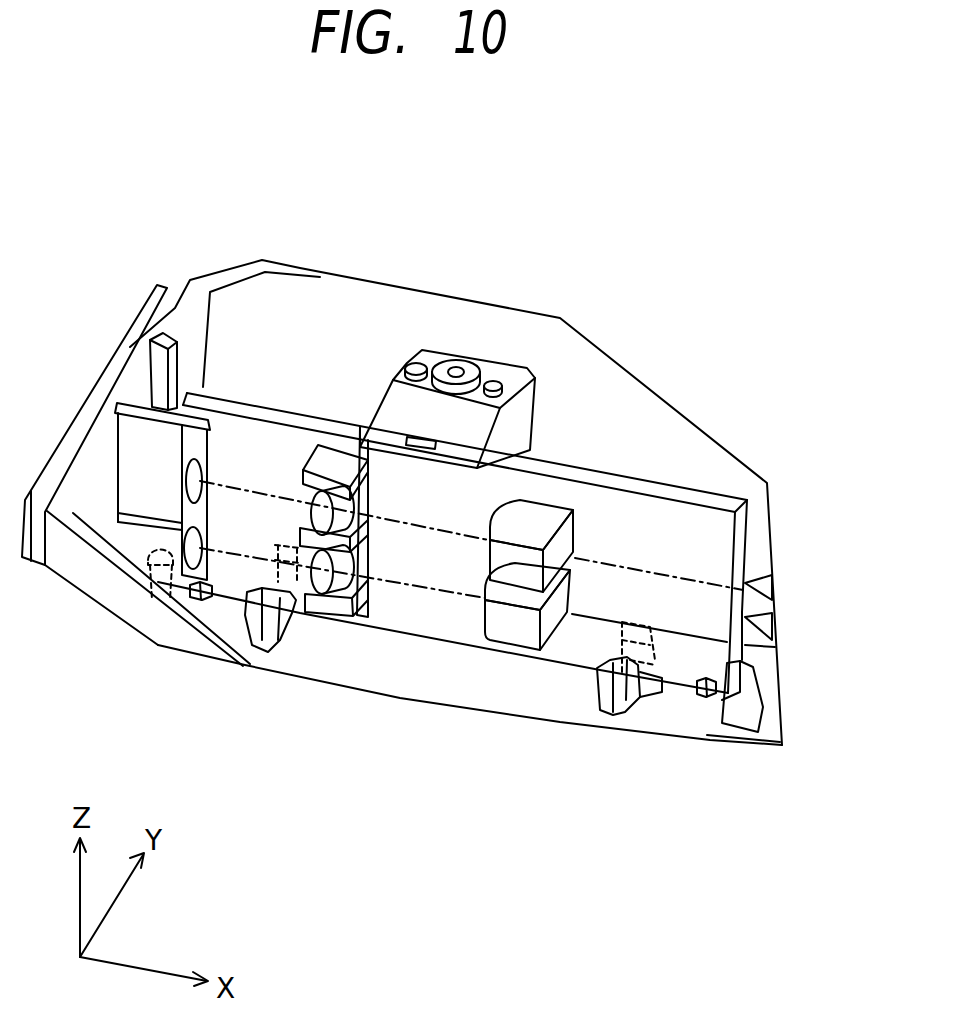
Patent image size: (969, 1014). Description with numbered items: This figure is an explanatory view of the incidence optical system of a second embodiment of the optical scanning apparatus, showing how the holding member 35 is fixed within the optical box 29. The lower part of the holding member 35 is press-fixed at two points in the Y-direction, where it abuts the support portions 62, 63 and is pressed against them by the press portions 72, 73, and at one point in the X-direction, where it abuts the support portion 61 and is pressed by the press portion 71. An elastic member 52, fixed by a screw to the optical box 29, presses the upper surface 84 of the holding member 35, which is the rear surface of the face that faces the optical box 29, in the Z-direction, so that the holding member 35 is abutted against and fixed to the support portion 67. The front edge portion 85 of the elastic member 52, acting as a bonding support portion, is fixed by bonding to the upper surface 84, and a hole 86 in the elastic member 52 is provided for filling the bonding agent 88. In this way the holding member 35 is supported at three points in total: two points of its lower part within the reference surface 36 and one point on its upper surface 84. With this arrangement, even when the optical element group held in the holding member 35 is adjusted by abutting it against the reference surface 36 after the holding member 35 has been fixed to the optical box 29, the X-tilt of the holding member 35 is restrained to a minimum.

The optical box 29 is at (240, 273).
The press portion 72 is at (285, 562).
The front edge portion 85 is at (371, 425).
The elastic member 52 is at (397, 403).
The hole 86 is at (485, 410).
The bonding agent 88 is at (485, 452).
The upper surface 84 is at (698, 493).
The holding member 35 is at (740, 537).
The press portion 73 is at (650, 627).
The press portion 71 is at (747, 682).
The support portion 61 is at (148, 572).
The support portion 67 is at (197, 587).
The support portion 62 is at (255, 647).
The reference surface 36 is at (432, 620).
The support portion 63 is at (607, 707).